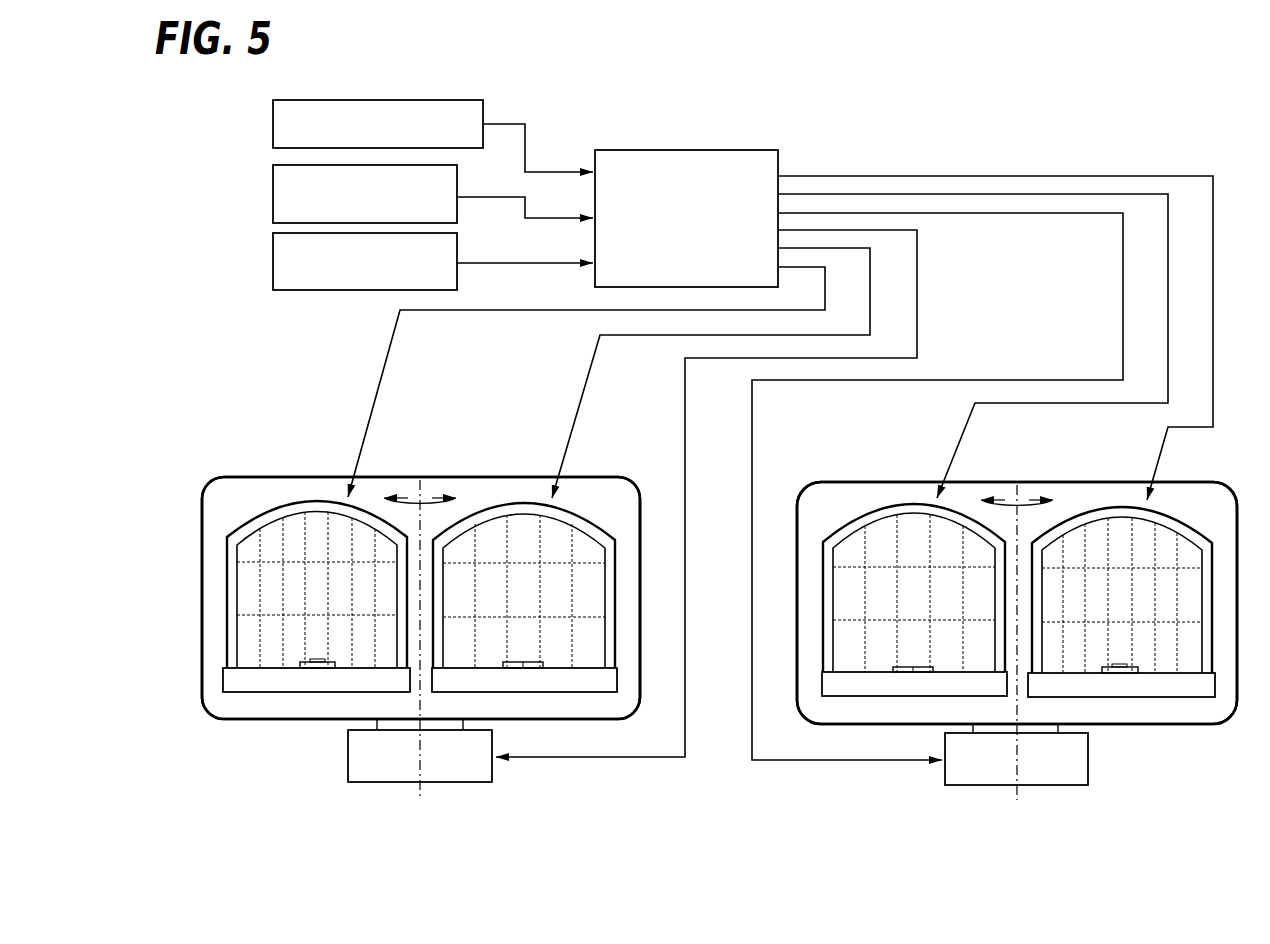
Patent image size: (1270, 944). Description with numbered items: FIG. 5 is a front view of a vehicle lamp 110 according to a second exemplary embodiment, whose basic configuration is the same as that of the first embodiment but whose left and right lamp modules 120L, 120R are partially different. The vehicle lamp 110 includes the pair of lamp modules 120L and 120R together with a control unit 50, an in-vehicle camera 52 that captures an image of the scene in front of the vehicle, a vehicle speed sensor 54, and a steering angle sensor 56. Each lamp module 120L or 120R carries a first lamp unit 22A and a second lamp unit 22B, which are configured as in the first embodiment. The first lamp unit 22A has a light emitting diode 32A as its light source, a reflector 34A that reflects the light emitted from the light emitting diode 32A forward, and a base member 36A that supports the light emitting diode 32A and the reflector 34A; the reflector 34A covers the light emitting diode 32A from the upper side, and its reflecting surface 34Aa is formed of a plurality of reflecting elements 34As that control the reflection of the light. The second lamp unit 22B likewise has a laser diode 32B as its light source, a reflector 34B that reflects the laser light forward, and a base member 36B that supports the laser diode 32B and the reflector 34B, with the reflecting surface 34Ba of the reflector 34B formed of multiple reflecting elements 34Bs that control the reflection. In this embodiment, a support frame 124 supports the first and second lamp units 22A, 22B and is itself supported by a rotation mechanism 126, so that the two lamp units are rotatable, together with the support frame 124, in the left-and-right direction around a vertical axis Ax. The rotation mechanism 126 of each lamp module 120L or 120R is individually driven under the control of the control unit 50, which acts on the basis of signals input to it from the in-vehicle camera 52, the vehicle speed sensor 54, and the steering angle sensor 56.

The vehicle lamp 110 is at (1080, 154).
The control unit 50 is at (724, 150).
The in-vehicle camera 52 is at (273, 130).
The vehicle speed sensor 54 is at (273, 198).
The steering angle sensor 56 is at (273, 265).
The lamp module 120R is at (460, 440).
The lamp module 120L is at (1058, 440).
The support frame 124 is at (332, 470).
The vertical axis Ax is at (420, 475).
The first lamp unit 22A is at (712, 578).
The second lamp unit 22B is at (719, 579).
The reflector 34A is at (298, 498).
The reflector 34B is at (528, 500).
The reflecting elements 34As is at (363, 545).
The reflecting elements 34Bs is at (515, 543).
The reflecting surface 34Aa is at (253, 548).
The reflecting surface 34Ba is at (585, 548).
The base member 36A is at (273, 692).
The base member 36B is at (565, 695).
The light emitting diode 32A is at (318, 658).
The laser diode 32B is at (525, 658).
The rotation mechanism 126 is at (346, 762).